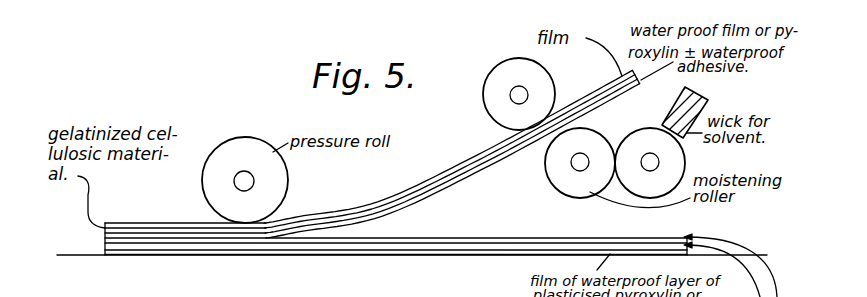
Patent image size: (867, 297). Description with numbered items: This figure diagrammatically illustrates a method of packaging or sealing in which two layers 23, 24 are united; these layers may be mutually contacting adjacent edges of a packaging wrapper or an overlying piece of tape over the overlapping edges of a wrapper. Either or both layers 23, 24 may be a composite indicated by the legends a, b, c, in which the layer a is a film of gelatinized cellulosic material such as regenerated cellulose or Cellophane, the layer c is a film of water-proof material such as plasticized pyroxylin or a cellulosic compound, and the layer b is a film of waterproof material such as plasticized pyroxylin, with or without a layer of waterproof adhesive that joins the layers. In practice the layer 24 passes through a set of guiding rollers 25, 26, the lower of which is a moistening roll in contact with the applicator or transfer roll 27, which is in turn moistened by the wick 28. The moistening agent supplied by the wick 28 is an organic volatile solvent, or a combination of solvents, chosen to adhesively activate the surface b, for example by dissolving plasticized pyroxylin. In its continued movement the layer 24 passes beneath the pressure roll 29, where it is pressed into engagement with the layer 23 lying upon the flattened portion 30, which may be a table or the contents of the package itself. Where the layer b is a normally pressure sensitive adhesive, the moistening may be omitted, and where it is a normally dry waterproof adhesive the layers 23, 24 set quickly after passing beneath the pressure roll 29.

The layer 23 is at (125, 255).
The layer 24 is at (138, 237).
The guiding roller 25 is at (494, 69).
The guiding roller 26 is at (547, 163).
The applicator or transfer roll 27 is at (638, 131).
The wick 28 is at (697, 93).
The pressure roll 29 is at (288, 173).
The flattened portion 30 is at (72, 255).
The film of gelatinized cellulosic material a is at (590, 104).
The film of waterproof material b is at (641, 86).
The film or layer of water-proof material c is at (599, 90).